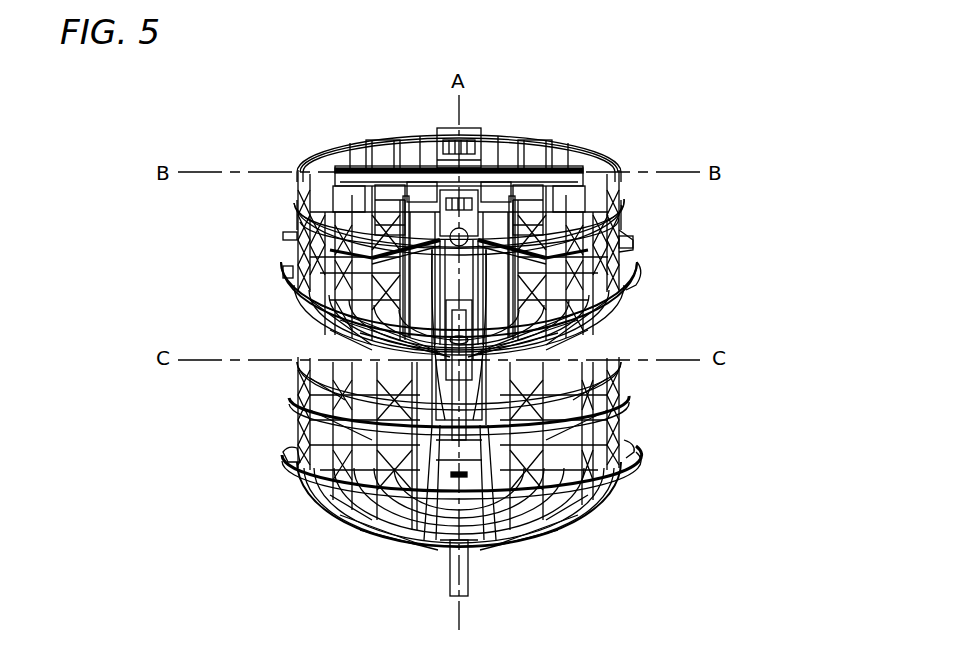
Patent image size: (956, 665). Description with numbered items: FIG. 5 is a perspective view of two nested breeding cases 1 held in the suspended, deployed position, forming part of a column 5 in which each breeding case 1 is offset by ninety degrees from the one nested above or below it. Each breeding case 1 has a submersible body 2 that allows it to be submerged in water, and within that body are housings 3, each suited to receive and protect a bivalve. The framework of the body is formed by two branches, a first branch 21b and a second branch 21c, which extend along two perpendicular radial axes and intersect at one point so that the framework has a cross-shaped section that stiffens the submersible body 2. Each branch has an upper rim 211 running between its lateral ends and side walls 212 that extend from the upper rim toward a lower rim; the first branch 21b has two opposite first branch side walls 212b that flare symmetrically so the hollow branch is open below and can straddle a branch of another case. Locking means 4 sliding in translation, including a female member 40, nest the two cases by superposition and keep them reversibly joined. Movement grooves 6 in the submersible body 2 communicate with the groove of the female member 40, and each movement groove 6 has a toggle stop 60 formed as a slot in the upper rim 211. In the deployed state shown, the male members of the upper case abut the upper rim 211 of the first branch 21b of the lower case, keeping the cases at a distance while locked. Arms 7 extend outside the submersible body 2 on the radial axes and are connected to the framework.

The breeding case 1 is at (335, 92).
The submersible body 2 is at (632, 278).
The housing 3 is at (284, 262).
The locking means 4 is at (325, 496).
The column 5 is at (750, 242).
The movement groove 6 is at (628, 245).
The arm 7 is at (455, 576).
The female member 40 is at (524, 172).
The toggle stop 60 is at (612, 195).
The upper rim 211 is at (412, 162).
The side wall 212 is at (445, 195).
The first branch side wall 212b is at (432, 446).
The first branch 21b is at (548, 172).
The second branch 21c is at (468, 130).